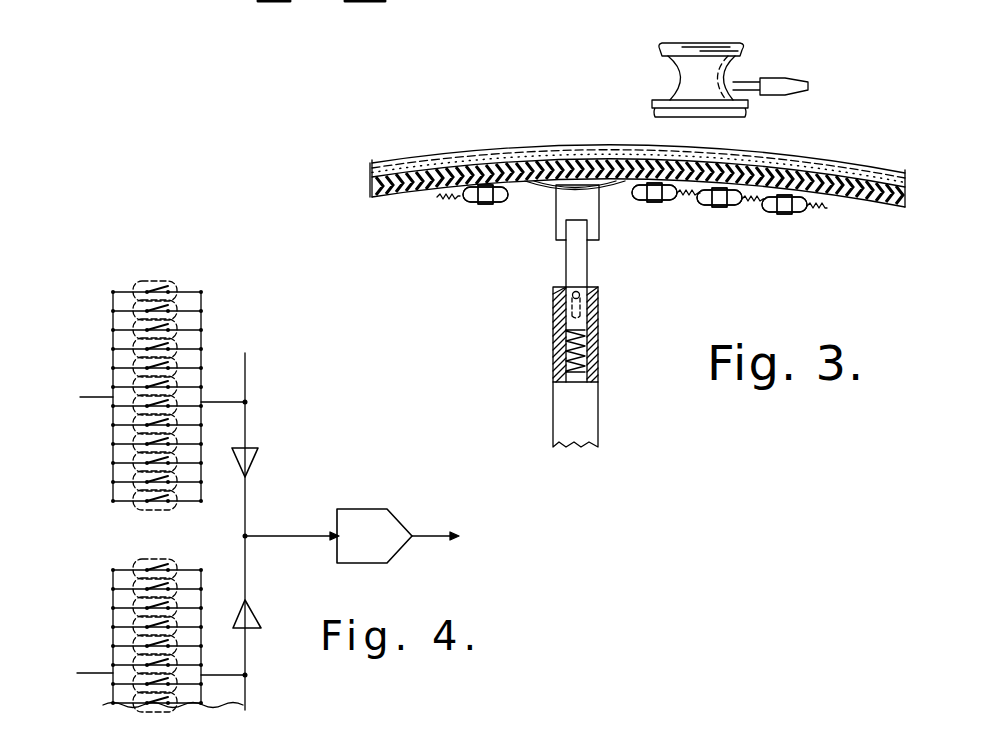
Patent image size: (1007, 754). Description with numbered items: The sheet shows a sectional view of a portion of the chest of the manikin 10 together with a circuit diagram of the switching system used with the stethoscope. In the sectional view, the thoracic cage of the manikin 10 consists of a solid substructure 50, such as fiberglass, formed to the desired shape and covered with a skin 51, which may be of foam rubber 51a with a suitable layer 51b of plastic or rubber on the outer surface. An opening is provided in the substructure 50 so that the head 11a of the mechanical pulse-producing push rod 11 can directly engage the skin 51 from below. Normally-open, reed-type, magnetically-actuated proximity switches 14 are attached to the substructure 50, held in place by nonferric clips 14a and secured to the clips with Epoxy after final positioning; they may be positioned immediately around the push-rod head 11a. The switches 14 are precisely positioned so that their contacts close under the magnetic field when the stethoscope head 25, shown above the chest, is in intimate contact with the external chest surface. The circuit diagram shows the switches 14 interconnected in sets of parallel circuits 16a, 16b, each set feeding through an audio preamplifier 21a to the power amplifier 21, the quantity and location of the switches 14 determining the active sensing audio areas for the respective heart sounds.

In FIG. 3, the manikin 10 is at (592, 133).
In FIG. 3, the push rod 11 is at (538, 333).
In FIG. 3, the push rod head 11a is at (540, 185).
In FIG. 3, the reed-type proximity switch 14 is at (466, 197).
In FIG. 3, the nonferric clip 14a is at (487, 203).
In FIG. 3, the set of parallel circuits 16a is at (757, 250).
In FIG. 4, the set of parallel circuits 16a is at (98, 350).
In FIG. 3, the set of parallel circuits 16b is at (471, 252).
In FIG. 4, the set of parallel circuits 16b is at (100, 620).
In FIG. 4, the power amplifier 21 is at (375, 522).
In FIG. 4, the audio preamplifier 21a is at (258, 452).
In FIG. 3, the stethoscope head 25 is at (706, 36).
In FIG. 3, the substructure 50 is at (372, 205).
In FIG. 3, the skin 51 is at (492, 145).
In FIG. 3, the foam rubber 51a is at (374, 180).
In FIG. 3, the outer layer 51b is at (412, 160).